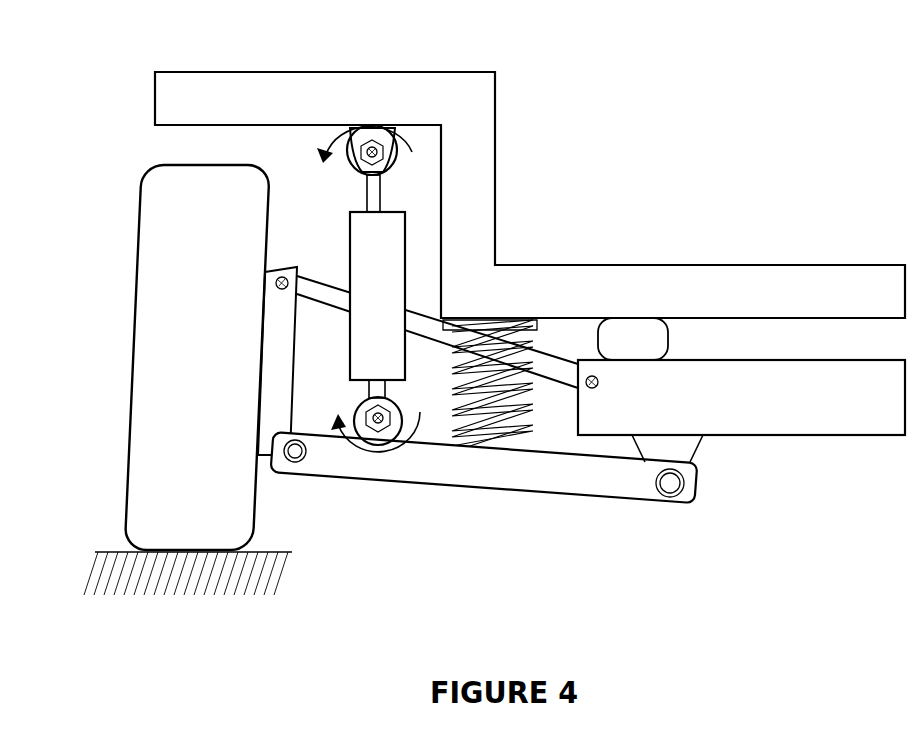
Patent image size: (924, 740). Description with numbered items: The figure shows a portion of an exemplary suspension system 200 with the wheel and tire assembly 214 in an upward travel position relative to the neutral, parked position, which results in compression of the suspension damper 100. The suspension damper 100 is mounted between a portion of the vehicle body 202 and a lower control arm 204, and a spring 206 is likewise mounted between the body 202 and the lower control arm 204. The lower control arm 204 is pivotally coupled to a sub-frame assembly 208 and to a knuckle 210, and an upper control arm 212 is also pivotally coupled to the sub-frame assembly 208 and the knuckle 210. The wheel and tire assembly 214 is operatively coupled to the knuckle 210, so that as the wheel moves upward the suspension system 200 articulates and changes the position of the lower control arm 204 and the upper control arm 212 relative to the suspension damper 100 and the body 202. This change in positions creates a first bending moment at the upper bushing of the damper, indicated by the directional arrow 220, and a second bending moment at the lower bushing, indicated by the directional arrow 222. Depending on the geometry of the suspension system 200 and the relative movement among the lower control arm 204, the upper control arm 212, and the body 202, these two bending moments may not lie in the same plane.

The suspension damper 100 is at (350, 200).
The suspension system 200 is at (716, 123).
The vehicle body 202 is at (497, 157).
The lower control arm 204 is at (427, 487).
The spring 206 is at (522, 370).
The sub-frame assembly 208 is at (807, 436).
The knuckle 210 is at (262, 398).
The upper control arm 212 is at (322, 280).
The wheel and tire assembly 214 is at (140, 275).
The directional arrow 220 is at (358, 122).
The directional arrow 222 is at (357, 452).